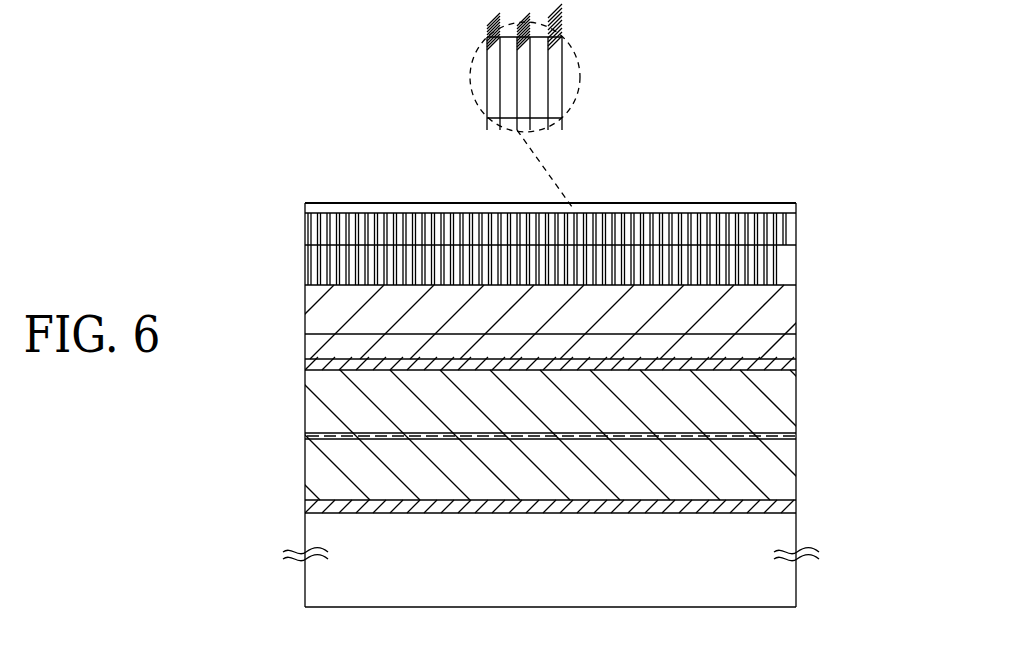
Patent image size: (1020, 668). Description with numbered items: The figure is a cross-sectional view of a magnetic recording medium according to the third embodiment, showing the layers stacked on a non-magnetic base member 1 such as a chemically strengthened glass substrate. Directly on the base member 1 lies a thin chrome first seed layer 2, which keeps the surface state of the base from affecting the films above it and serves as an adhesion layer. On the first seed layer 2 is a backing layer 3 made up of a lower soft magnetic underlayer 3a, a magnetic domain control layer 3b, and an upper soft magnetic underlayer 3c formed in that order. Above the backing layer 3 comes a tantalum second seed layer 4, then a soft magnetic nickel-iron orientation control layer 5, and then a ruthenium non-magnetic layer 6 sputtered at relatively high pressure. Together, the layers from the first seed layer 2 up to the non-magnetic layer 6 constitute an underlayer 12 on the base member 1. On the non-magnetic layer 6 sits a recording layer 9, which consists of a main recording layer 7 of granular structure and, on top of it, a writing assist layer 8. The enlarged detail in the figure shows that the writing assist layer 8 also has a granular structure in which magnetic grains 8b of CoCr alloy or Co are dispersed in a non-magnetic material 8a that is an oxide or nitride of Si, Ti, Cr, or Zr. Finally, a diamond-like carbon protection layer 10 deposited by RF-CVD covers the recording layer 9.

The non-magnetic base member 1 is at (447, 590).
The first seed layer 2 is at (760, 506).
The backing layer 3 is at (555, 435).
The lower soft magnetic underlayer 3a is at (583, 477).
The magnetic domain control layer 3b is at (798, 437).
The upper soft magnetic underlayer 3c is at (775, 405).
The second seed layer 4 is at (792, 365).
The orientation control layer 5 is at (780, 345).
The non-magnetic layer 6 is at (780, 312).
The main recording layer 7 is at (580, 265).
The writing assist layer 8 is at (796, 230).
The non-magnetic material 8a is at (540, 62).
The magnetic grains 8b is at (490, 52).
The recording layer 9 is at (604, 144).
The protection layer 10 is at (707, 208).
The underlayer 12 is at (555, 409).